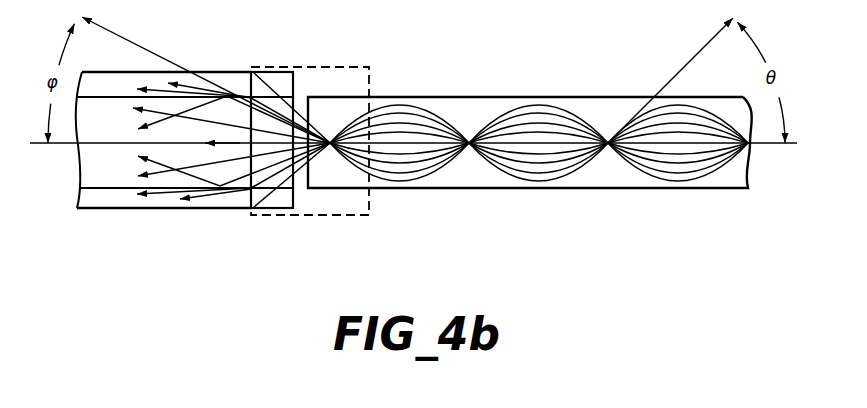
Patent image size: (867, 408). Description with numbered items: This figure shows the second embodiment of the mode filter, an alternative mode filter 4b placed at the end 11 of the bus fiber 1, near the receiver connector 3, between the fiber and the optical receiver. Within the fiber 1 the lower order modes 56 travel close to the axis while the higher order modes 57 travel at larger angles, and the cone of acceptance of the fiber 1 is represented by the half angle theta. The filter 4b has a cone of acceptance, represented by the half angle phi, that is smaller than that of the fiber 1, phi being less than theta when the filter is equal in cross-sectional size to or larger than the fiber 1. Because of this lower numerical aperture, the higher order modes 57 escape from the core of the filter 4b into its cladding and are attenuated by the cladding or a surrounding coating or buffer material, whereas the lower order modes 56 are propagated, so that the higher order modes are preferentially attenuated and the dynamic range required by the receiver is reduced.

The optical fiber 1 is at (613, 190).
The receiver connector 3 is at (372, 75).
The end of the optical fiber 11 is at (301, 100).
The mode filter 4b is at (205, 209).
The lower order modes 56 is at (422, 152).
The higher order modes 57 is at (555, 105).